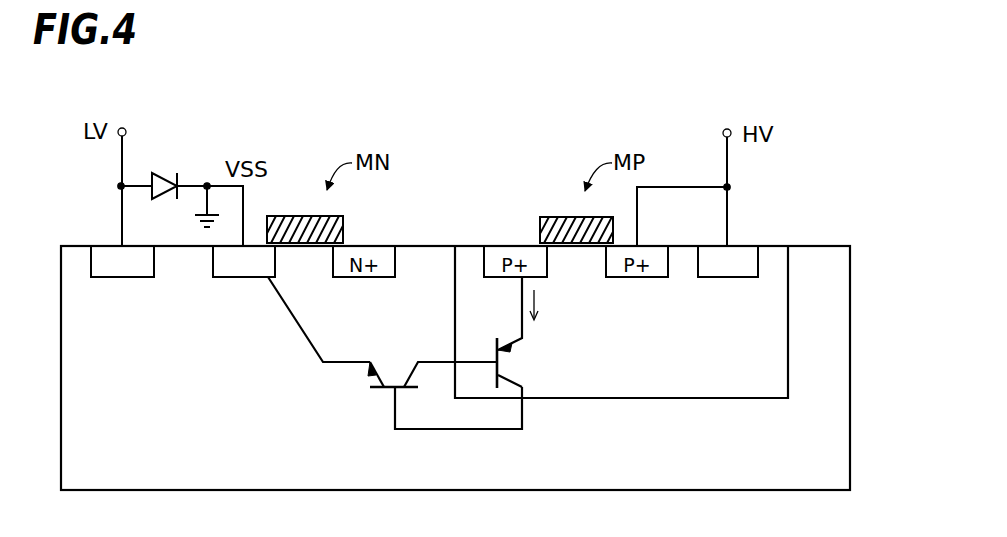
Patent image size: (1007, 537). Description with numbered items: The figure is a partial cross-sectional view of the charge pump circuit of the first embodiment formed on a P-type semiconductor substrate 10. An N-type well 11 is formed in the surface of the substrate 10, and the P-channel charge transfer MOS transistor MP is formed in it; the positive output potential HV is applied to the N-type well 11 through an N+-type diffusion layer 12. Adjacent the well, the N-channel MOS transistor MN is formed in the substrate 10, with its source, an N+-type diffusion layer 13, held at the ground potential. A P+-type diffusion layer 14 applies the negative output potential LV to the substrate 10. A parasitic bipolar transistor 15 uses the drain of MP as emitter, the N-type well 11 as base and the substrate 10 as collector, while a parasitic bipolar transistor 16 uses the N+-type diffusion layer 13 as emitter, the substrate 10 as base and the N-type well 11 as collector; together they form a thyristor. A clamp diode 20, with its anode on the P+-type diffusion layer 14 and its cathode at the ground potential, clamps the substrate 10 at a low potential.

The P-type semiconductor substrate 10 is at (828, 458).
The N-type well 11 is at (772, 380).
The N+-type diffusion layer 12 is at (732, 278).
The N+-type diffusion layer 13 is at (240, 278).
The P+-type diffusion layer 14 is at (122, 278).
The parasitic bipolar transistor 15 is at (527, 356).
The parasitic bipolar transistor 16 is at (370, 397).
The clamp diode 20 is at (167, 172).